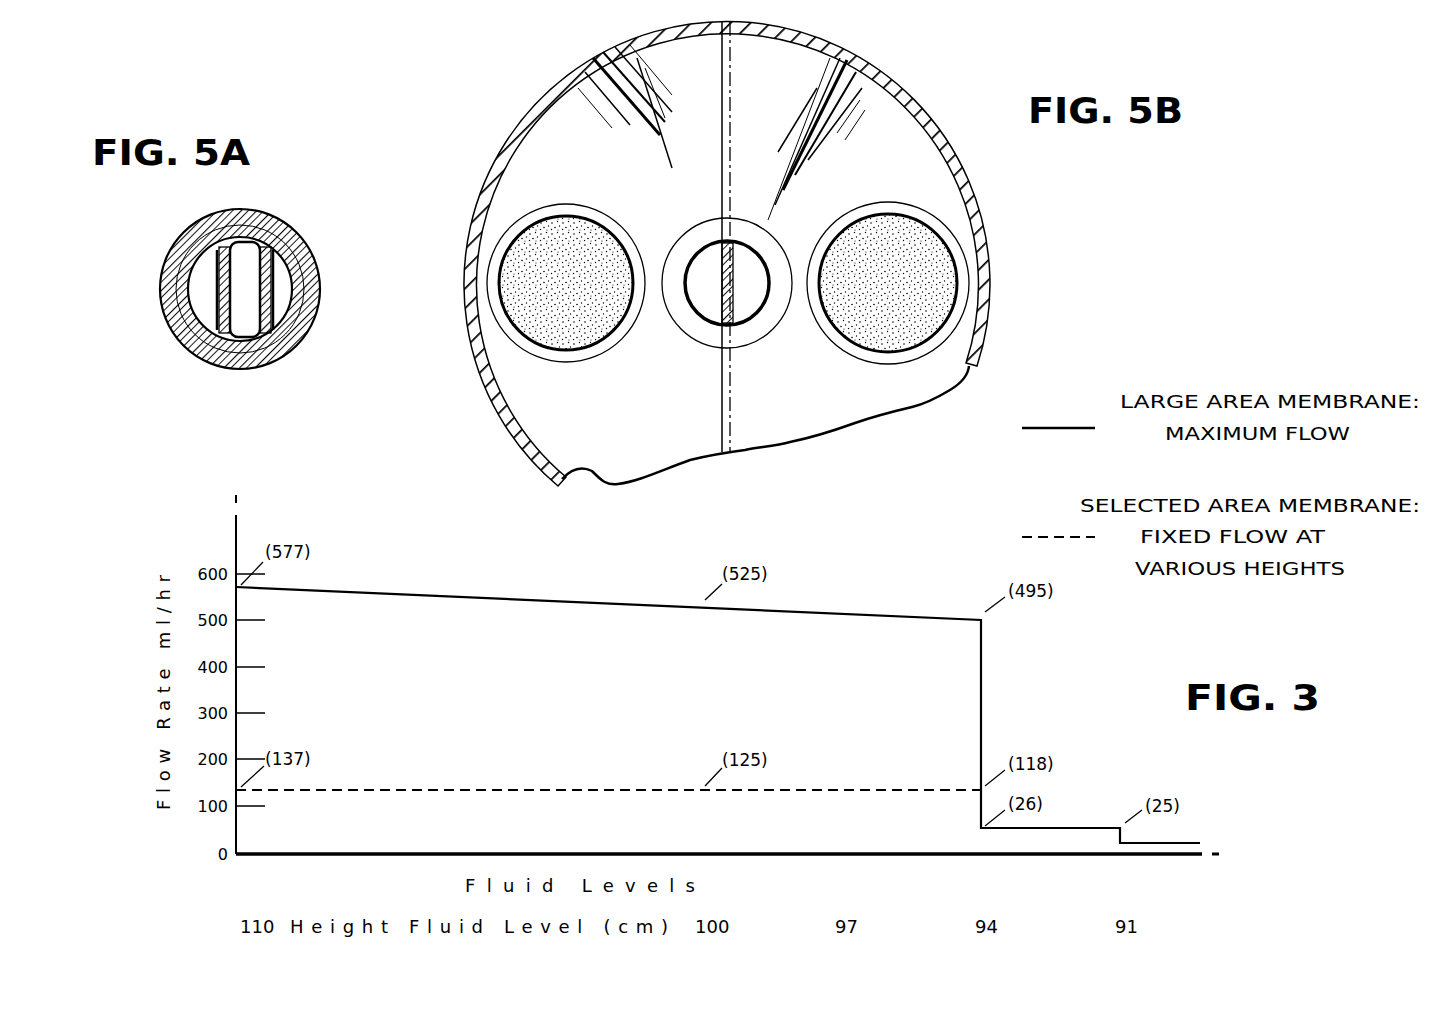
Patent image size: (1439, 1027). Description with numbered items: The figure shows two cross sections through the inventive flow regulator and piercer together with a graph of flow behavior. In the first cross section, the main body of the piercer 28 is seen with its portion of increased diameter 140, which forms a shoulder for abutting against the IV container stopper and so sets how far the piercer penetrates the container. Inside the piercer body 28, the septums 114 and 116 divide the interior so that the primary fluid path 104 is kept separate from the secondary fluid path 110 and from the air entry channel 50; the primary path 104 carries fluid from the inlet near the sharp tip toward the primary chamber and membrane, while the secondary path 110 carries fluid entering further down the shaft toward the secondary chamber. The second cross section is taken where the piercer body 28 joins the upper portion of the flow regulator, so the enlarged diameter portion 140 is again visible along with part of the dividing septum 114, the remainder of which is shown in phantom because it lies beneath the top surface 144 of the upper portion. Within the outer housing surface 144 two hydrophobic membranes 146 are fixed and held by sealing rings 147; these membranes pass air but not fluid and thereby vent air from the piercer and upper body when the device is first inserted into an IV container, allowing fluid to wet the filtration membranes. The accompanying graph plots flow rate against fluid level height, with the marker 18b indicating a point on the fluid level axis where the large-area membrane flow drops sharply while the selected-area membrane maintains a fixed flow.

In FIG. 5A, the piercer body 28 is at (292, 210).
In FIG. 5A, the air entry channel 50 is at (282, 282).
In FIG. 5A, the primary fluid path 104 is at (238, 258).
In FIG. 5B, the primary fluid path 104 is at (753, 295).
In FIG. 5A, the secondary fluid path 110 is at (210, 302).
In FIG. 5B, the secondary fluid path 110 is at (706, 296).
In FIG. 5A, the septum 114 is at (222, 275).
In FIG. 5B, the septum 114 is at (730, 160).
In FIG. 5A, the septum 116 is at (268, 310).
In FIG. 5A, the portion of increased diameter 140 is at (205, 350).
In FIG. 5B, the portion of increased diameter 140 is at (690, 248).
In FIG. 5B, the outer housing surface 144 is at (878, 120).
In FIG. 5B, the hydrophobic membrane filter 146 is at (527, 274).
In FIG. 5B, the sealing ring 147 is at (549, 207).
In FIG. 3, the fluid level reference point 18b is at (990, 884).